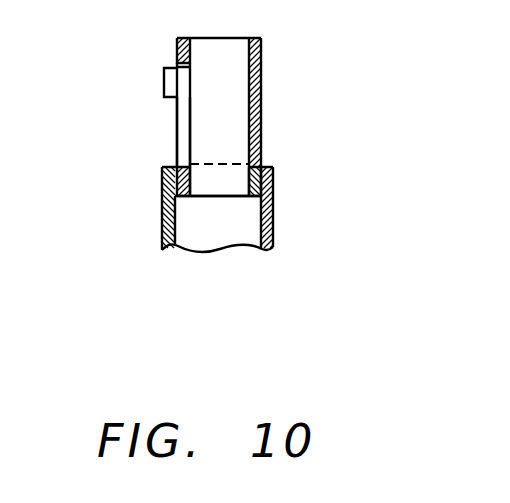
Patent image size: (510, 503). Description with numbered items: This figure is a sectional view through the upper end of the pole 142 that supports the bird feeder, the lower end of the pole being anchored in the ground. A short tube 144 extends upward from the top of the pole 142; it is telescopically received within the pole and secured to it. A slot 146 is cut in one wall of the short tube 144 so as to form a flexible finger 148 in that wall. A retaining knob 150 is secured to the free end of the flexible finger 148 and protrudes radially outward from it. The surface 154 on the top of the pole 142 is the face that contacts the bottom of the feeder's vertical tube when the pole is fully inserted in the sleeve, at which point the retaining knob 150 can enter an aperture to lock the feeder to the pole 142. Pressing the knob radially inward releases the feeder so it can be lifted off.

The pole 142 is at (273, 217).
The short tube 144 is at (263, 60).
The slot 146 is at (178, 57).
The flexible finger 148 is at (188, 120).
The retaining knob 150 is at (176, 83).
The surface 154 is at (265, 164).